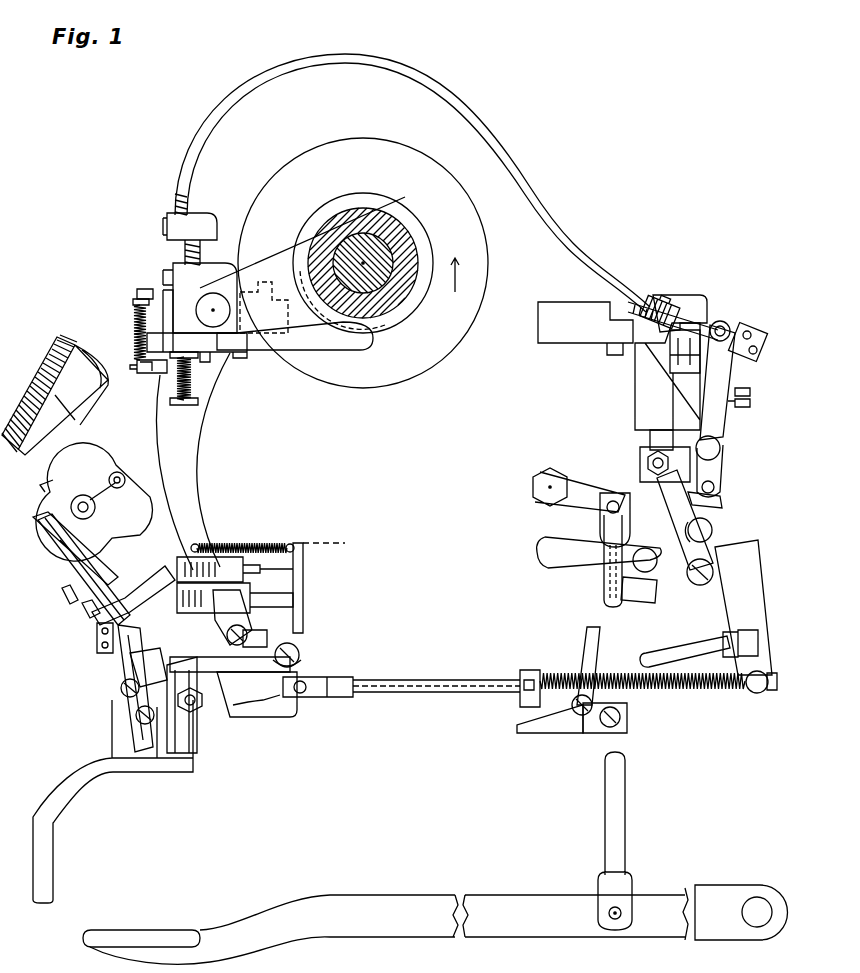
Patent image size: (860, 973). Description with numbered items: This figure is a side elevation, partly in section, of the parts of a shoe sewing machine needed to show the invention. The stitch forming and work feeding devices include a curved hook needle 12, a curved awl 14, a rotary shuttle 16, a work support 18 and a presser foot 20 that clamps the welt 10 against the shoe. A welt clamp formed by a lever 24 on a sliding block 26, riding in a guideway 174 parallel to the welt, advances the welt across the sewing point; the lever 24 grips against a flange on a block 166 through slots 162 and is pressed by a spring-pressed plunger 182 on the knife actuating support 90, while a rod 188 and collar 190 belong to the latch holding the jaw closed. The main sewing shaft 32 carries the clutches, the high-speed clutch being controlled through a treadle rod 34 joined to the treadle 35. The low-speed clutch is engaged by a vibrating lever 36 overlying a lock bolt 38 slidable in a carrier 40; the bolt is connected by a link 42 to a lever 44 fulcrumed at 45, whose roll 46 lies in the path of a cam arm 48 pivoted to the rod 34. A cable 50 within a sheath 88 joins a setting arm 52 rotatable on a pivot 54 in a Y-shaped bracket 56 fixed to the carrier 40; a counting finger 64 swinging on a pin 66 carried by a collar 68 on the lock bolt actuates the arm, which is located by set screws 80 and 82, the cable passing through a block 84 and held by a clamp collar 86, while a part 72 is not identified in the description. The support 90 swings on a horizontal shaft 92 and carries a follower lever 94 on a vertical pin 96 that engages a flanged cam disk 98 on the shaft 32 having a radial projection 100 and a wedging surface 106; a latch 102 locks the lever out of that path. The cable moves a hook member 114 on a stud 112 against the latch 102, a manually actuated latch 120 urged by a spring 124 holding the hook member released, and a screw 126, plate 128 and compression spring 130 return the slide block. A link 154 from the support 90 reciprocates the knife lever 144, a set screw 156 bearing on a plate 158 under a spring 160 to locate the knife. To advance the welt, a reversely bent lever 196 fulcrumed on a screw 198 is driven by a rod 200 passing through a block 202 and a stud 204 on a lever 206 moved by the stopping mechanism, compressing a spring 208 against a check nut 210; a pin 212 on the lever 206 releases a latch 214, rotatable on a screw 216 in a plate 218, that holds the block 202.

The welt 10 is at (140, 672).
The curved hook needle 12 is at (50, 475).
The curved awl 14 is at (58, 572).
The rotary shuttle 16 is at (92, 370).
The work support 18 is at (33, 530).
The presser foot 20 is at (70, 495).
The movable jaw lever 24 is at (138, 598).
The sliding block 26 is at (140, 712).
The main sewing shaft 32 is at (395, 265).
The treadle rod 34 is at (603, 592).
The treadle 35 is at (370, 892).
The vibrating cam-actuated lever 36 is at (655, 293).
The lock bolt 38 is at (650, 437).
The lock bolt carrier 40 is at (555, 343).
The link 42 is at (716, 502).
The lever 44 is at (560, 565).
The fulcrum 45 is at (660, 585).
The roll 46 is at (718, 526).
The cam arm 48 is at (570, 512).
The cable 50 is at (185, 253).
The setting arm 52 is at (725, 420).
The pivot 54 is at (720, 446).
The Y-shaped bracket 56 is at (635, 403).
The counting finger 64 is at (678, 350).
The pin 66 is at (716, 487).
The collar 68 is at (640, 462).
The bracket 72 is at (712, 310).
The adjustable set screw 80 is at (748, 402).
The set screw 82 is at (748, 390).
The block 84 is at (728, 328).
The clamp collar 86 is at (760, 333).
The sheath 88 is at (482, 170).
The knife actuating support 90 is at (203, 430).
The horizontal shaft 92 is at (206, 294).
The follower lever 94 is at (333, 348).
The vertical pin 96 is at (257, 262).
The flanged cam disk 98 is at (352, 210).
The radial projection 100 is at (390, 215).
The latch 102 is at (168, 338).
The wedging surface 106 is at (420, 285).
The stud 112 is at (137, 292).
The hook member 114 is at (134, 320).
The manually actuated latch 120 is at (156, 375).
The spring 124 is at (136, 302).
The screw 126 is at (197, 402).
The plate 128 is at (200, 357).
The compression spring 130 is at (193, 380).
The knife lever 144 is at (62, 595).
The link 154 is at (270, 632).
The set screw 156 is at (298, 601).
The plate 158 is at (298, 580).
The spring 160 is at (272, 545).
The slots 162 is at (80, 612).
The block 166 is at (97, 642).
The guideway 174 is at (200, 660).
The spring-pressed plunger 182 is at (190, 560).
The rod 188 is at (193, 740).
The collar 190 is at (200, 712).
The reversely bent lever 196 is at (240, 685).
The screw 198 is at (302, 652).
The rod 200 is at (337, 695).
The block 202 is at (525, 665).
The stud 204 is at (750, 693).
The lever 206 is at (727, 630).
The spring 208 is at (645, 692).
The check nut 210 is at (770, 690).
The pin 212 is at (672, 650).
The latch 214 is at (586, 636).
The screw 216 is at (596, 733).
The plate 218 is at (540, 735).